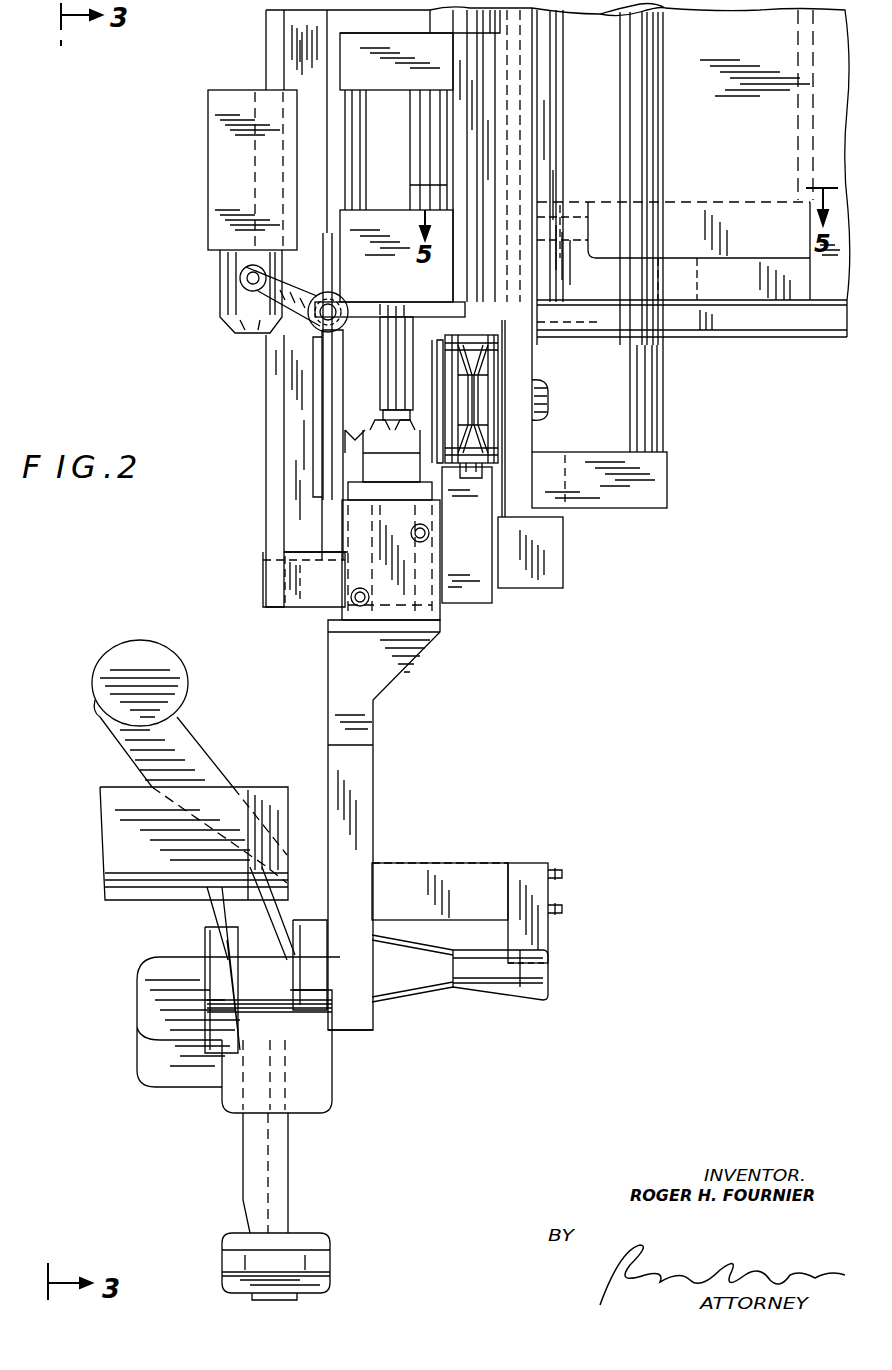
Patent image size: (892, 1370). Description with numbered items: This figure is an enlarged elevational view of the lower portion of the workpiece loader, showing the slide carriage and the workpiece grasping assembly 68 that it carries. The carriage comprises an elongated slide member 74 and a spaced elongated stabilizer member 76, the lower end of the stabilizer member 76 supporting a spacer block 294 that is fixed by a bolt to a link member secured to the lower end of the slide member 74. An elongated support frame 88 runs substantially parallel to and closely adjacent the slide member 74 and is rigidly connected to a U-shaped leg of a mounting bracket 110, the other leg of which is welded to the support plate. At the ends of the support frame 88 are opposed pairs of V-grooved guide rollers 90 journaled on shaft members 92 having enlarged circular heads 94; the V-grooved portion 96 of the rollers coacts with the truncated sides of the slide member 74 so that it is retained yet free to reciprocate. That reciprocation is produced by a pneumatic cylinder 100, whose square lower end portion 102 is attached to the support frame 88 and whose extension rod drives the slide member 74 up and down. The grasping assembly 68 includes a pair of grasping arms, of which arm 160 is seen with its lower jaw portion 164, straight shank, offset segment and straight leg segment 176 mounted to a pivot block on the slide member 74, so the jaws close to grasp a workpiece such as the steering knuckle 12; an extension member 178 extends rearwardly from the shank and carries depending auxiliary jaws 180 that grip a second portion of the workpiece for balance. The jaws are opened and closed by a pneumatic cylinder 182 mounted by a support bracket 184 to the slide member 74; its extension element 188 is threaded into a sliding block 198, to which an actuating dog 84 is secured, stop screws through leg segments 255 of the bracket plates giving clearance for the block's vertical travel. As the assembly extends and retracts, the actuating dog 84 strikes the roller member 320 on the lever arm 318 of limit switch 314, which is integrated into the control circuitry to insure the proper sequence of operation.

The stabilizer member 76 is at (272, 47).
The pneumatic cylinder 182 is at (342, 102).
The slide member 74 is at (520, 127).
The mounting bracket 110 is at (812, 288).
The enlarged circular heads 94 is at (440, 322).
The limit switch assembly 314 is at (220, 290).
The lever arm 318 is at (258, 298).
The roller member 320 is at (315, 322).
The actuating dog 84 is at (330, 427).
The support bracket 184 is at (365, 322).
The extension element 188 is at (392, 383).
The sliding block 198 is at (352, 446).
The V-grooved guide rollers 90 is at (490, 357).
The shaft members 92 is at (502, 417).
The V-grooved portion 96 is at (470, 470).
The pneumatic cylinder 100 is at (665, 400).
The square lower end portion 102 is at (670, 462).
The support frame 88 is at (522, 503).
The leg segments 255 is at (480, 595).
The straight leg segment 176 is at (436, 612).
The spacer block 294 is at (300, 610).
The workpiece grasping assembly 68 is at (460, 703).
The workpiece grasping arm 160 is at (374, 795).
The extension member 178 is at (497, 855).
The auxiliary jaws 180 is at (550, 937).
The steering knuckle 12 is at (418, 995).
The lower jaw portion 164 is at (363, 1020).